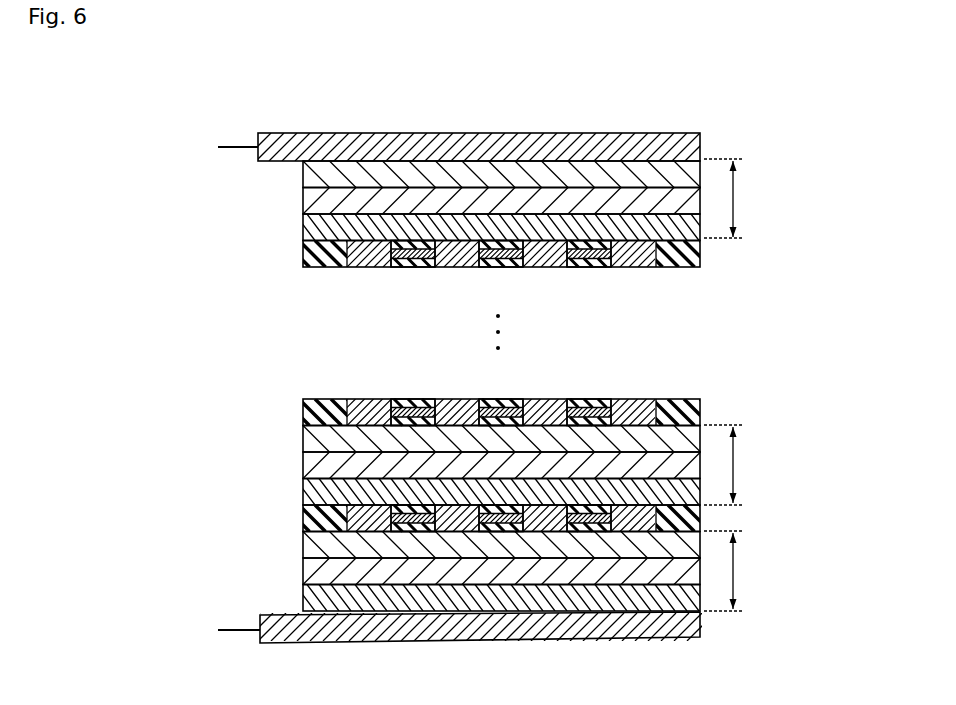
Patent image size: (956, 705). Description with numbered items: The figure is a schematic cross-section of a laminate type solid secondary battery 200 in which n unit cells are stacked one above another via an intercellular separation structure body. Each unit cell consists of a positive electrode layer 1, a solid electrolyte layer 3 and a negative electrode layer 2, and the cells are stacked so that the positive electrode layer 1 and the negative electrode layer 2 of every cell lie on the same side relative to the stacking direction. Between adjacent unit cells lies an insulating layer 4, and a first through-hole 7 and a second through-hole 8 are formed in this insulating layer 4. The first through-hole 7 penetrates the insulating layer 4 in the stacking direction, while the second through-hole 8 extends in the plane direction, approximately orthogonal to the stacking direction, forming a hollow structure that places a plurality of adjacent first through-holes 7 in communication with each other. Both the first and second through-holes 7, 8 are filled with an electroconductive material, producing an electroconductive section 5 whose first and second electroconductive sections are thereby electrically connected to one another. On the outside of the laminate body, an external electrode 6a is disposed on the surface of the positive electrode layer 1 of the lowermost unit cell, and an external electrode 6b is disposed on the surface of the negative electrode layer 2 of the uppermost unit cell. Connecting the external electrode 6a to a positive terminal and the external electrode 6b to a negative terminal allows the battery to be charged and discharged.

The laminate type solid secondary battery 200 is at (600, 107).
The positive electrode layer 1 is at (317, 230).
The negative electrode layer 2 is at (315, 175).
The solid electrolyte layer 3 is at (315, 202).
The insulating layer 4 is at (683, 268).
The electroconductive section 5 is at (636, 268).
The external electrode 6a is at (677, 625).
The external electrode 6b is at (676, 145).
The first through-hole 7 is at (352, 268).
The second through-hole 8 is at (420, 268).